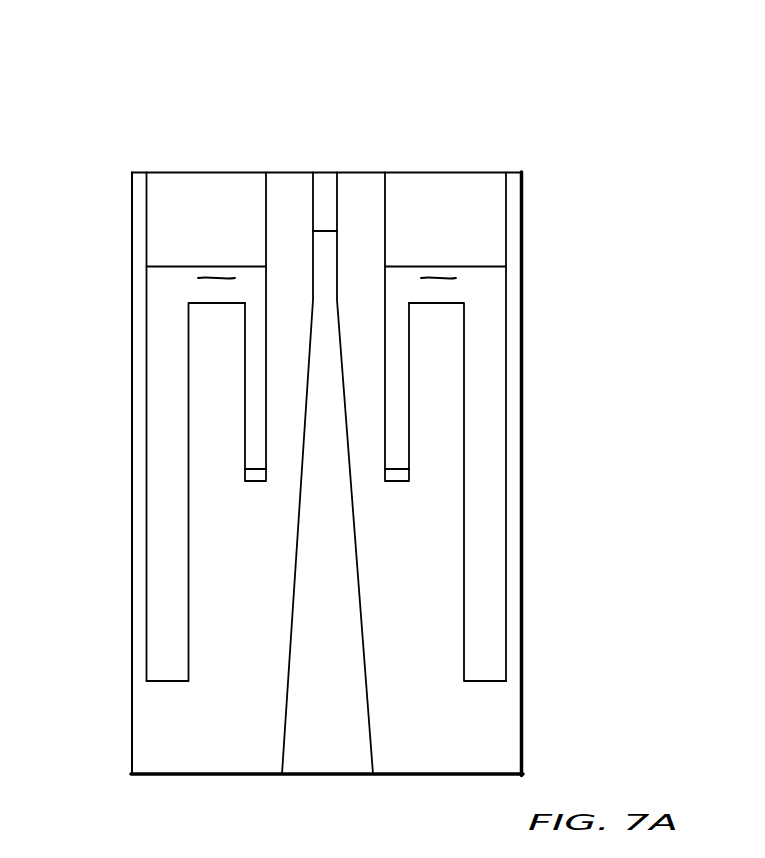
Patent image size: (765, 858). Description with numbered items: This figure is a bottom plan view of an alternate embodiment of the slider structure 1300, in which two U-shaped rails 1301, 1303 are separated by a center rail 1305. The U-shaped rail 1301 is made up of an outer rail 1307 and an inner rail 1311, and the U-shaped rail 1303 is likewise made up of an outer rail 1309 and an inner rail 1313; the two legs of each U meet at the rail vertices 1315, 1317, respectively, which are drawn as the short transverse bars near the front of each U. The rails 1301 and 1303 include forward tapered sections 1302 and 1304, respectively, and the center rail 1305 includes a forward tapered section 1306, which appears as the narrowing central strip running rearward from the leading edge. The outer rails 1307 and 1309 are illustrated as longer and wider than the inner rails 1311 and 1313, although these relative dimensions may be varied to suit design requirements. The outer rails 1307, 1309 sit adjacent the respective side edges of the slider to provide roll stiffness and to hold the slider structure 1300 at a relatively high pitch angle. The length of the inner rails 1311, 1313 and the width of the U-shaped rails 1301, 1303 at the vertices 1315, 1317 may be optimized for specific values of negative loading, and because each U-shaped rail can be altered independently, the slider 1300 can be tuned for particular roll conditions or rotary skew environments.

The slider structure 1300 is at (526, 118).
The U-shaped rail 1301 is at (487, 330).
The forward tapered section 1302 is at (484, 212).
The U-shaped rail 1303 is at (170, 330).
The forward tapered section 1304 is at (163, 215).
The center rail 1305 is at (343, 748).
The forward tapered section 1306 is at (323, 178).
The outer rail 1307 is at (466, 540).
The outer rail 1309 is at (188, 540).
The inner rail 1311 is at (396, 470).
The inner rail 1313 is at (257, 470).
The rail vertex 1315 is at (438, 278).
The rail vertex 1317 is at (218, 278).